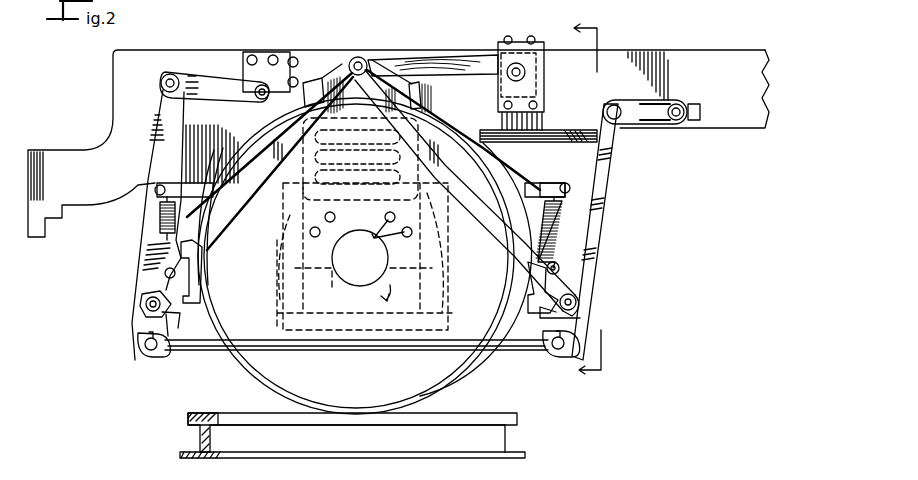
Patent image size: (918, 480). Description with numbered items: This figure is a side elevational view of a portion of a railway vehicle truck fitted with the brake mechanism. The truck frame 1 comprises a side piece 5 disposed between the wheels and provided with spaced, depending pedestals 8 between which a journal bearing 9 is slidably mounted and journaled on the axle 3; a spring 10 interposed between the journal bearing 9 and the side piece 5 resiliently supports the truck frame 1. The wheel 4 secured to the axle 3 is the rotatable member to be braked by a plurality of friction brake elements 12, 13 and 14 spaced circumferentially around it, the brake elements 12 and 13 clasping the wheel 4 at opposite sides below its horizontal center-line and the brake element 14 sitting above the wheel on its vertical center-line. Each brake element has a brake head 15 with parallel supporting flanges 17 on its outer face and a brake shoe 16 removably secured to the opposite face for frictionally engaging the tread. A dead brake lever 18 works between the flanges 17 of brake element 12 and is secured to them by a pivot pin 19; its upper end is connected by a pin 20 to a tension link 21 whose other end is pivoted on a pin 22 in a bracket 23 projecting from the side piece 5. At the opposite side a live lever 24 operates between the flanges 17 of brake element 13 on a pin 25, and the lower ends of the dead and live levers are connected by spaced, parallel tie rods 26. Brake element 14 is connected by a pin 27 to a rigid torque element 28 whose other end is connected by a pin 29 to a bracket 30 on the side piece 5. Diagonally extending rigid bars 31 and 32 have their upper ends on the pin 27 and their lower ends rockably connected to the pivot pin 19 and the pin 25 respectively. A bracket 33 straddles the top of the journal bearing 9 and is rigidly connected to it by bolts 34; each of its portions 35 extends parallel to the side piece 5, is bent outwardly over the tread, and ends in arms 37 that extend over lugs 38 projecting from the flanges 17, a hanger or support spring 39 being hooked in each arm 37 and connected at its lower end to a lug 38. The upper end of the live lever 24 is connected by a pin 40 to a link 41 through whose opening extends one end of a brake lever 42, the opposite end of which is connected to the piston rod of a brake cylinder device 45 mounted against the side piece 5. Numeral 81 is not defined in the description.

The truck frame 1 is at (185, 48).
The axle 3 is at (499, 200).
The wheel 4 is at (468, 385).
The side piece 5 is at (703, 50).
The pedestal 8 is at (455, 265).
The journal bearing 9 is at (336, 320).
The spring 10 is at (361, 249).
The friction brake element 12 is at (202, 278).
The friction brake element 13 is at (506, 312).
The friction brake element 14 is at (310, 85).
The brake head 15 is at (580, 320).
The brake shoe 16 is at (418, 101).
The supporting flange 17 is at (587, 303).
The dead brake lever 18 is at (147, 243).
The pivot pin 19 is at (146, 301).
The pin 20 is at (160, 83).
The tension link 21 is at (222, 80).
The pin 22 is at (254, 92).
The bracket 23 is at (255, 56).
The live lever 24 is at (605, 190).
The pin 25 is at (578, 300).
The tie rod 26 is at (370, 348).
The pin 27 is at (362, 66).
The rigid torque element 28 is at (445, 58).
The pin 29 is at (527, 73).
The bracket 30 is at (540, 44).
The rigid bar 31 is at (142, 310).
The rigid bar 32 is at (445, 157).
The bracket 33 is at (262, 226).
The bolt 34 is at (384, 243).
The portion 35 is at (531, 183).
The arm 37 is at (550, 183).
The lug 38 is at (559, 267).
The hanger or support spring 39 is at (562, 228).
The pin 40 is at (614, 104).
The link 41 is at (652, 104).
The brake lever 42 is at (700, 111).
The brake cylinder device 45 is at (560, 141).
The housing wall 81 is at (245, 148).